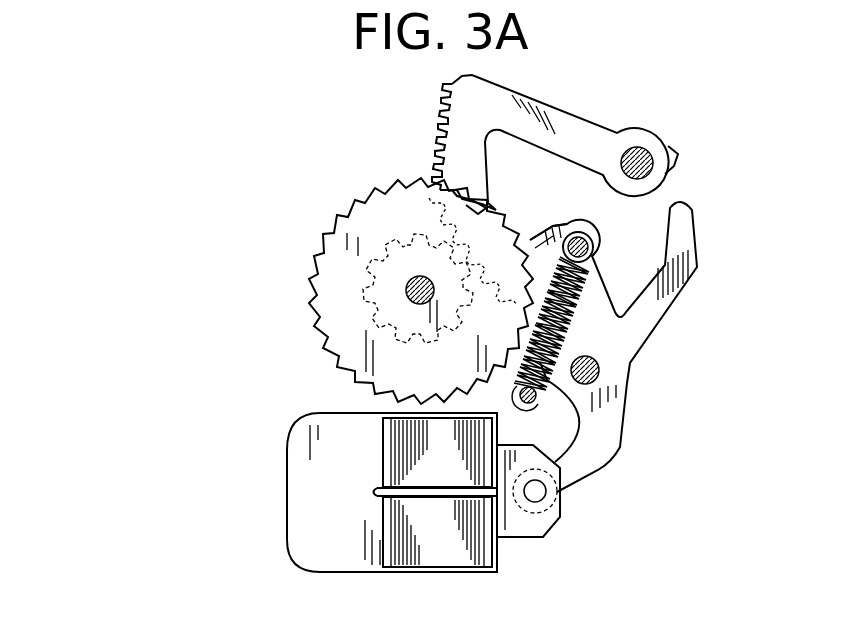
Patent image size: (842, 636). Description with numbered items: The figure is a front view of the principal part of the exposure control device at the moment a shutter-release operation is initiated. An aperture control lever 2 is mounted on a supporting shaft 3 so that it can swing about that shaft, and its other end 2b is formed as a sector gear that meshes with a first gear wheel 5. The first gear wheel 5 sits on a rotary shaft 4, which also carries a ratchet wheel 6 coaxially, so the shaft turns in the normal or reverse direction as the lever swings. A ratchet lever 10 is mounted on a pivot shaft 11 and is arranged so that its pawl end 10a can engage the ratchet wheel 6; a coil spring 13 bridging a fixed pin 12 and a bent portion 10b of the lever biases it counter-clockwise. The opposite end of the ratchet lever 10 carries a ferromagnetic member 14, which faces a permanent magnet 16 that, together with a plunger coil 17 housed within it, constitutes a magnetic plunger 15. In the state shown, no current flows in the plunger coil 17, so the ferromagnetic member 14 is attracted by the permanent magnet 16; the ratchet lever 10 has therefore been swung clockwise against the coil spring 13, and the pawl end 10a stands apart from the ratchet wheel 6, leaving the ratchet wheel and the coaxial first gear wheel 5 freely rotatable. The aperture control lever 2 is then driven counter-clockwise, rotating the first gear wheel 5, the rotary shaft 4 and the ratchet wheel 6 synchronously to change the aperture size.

The aperture control lever 2 is at (568, 125).
The sector gear end of the lever 2b is at (437, 125).
The supporting shaft 3 is at (640, 150).
The rotary shaft 4 is at (407, 283).
The first gear wheel 5 is at (390, 330).
The ratchet wheel 6 is at (467, 190).
The ratchet lever 10 is at (642, 328).
The pawl end 10a is at (527, 237).
The bent portion 10b is at (625, 239).
The pivot shaft 11 is at (620, 393).
The fixed pin 12 is at (522, 412).
The coil spring 13 is at (583, 307).
The ferromagnetic member 14 is at (540, 527).
The magnetic plunger 15 is at (287, 485).
The permanent magnet 16 is at (350, 565).
The plunger coil 17 is at (447, 553).